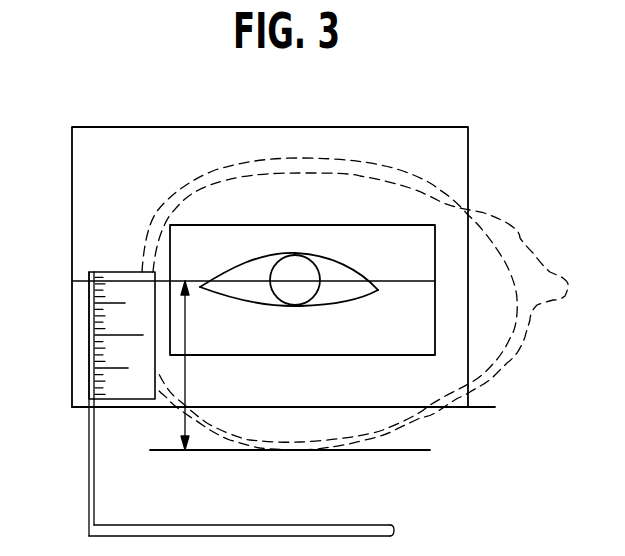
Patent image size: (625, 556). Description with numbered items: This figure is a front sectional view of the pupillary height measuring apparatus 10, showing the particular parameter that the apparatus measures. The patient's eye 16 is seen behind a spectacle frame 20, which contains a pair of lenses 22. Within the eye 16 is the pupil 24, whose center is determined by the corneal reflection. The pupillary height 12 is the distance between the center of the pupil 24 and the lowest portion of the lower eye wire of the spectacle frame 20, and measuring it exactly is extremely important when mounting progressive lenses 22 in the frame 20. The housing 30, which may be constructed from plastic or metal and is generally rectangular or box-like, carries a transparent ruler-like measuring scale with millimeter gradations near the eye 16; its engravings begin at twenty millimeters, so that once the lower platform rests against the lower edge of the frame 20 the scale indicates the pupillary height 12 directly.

The apparatus 10 is at (92, 102).
The pupillary height 12 is at (187, 375).
The eye 16 is at (333, 273).
The spectacle frame 20 is at (496, 232).
The lenses 22 is at (295, 187).
The pupil 24 is at (283, 268).
The housing 30 is at (455, 133).